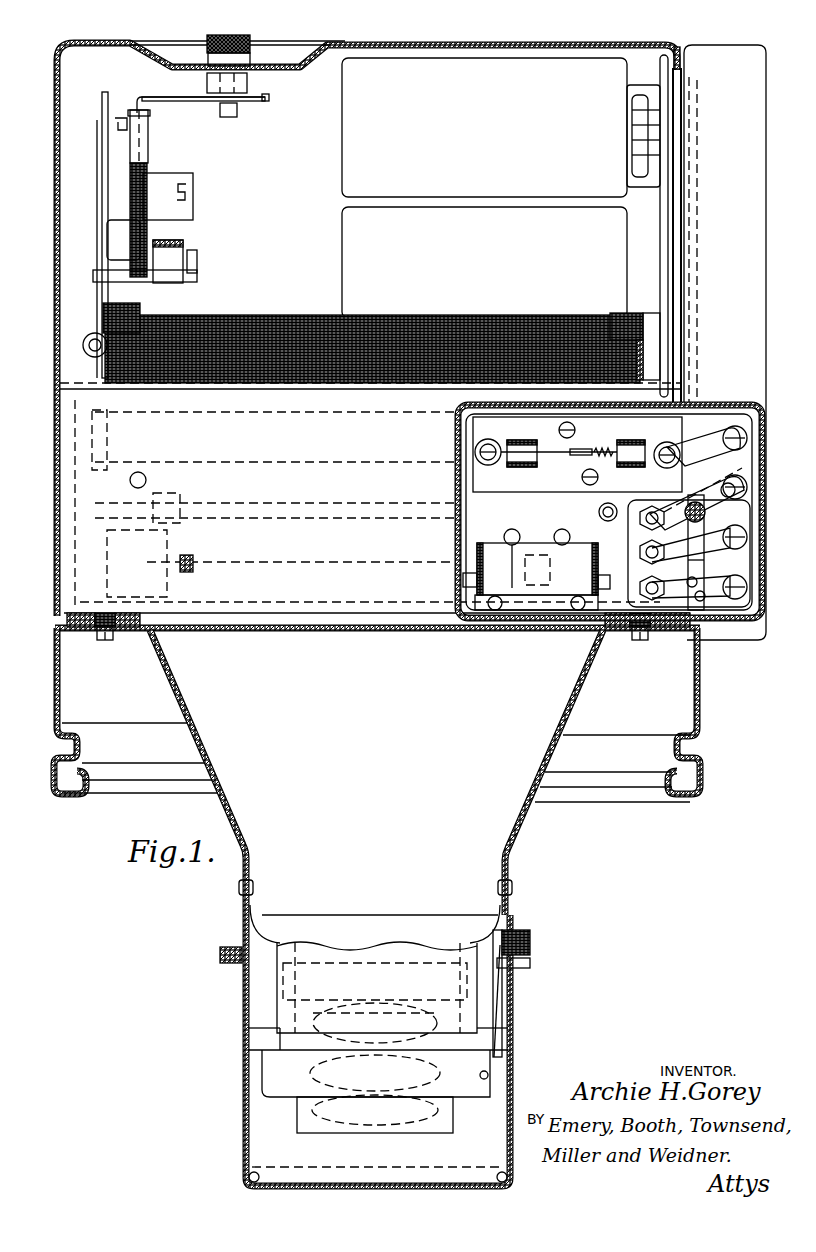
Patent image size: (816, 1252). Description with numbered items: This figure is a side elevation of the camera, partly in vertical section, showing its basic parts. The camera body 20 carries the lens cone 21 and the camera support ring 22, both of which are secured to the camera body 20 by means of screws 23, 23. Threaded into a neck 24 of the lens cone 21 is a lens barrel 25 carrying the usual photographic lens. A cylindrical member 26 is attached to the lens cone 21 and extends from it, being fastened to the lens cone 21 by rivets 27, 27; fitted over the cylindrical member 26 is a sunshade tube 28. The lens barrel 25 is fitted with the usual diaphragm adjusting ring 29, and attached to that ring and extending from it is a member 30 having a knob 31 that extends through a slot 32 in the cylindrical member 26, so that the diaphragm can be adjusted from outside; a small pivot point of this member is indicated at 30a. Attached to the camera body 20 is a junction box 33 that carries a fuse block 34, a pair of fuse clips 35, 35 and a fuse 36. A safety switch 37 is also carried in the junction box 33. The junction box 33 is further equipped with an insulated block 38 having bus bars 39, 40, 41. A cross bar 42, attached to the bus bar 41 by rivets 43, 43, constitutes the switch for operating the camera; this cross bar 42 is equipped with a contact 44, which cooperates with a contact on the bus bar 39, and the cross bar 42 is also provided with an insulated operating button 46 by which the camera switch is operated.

The camera body 20 is at (88, 382).
The lens cone 21 is at (238, 812).
The camera support ring 22 is at (62, 690).
The screws 23 is at (103, 645).
The neck 24 is at (281, 970).
The lens barrel 25 is at (285, 1040).
The cylindrical member 26 is at (243, 916).
The rivets 27 is at (255, 888).
The sunshade tube 28 is at (243, 1112).
The diaphragm adjusting ring 29 is at (462, 1085).
The member 30 is at (503, 1017).
The pivot 30a is at (489, 1076).
The knob 31 is at (531, 941).
The slot 32 is at (531, 963).
The junction box 33 is at (722, 410).
The fuse block 34 is at (527, 485).
The fuse clips 35 is at (518, 447).
The fuse 36 is at (583, 450).
The safety switch 37 is at (488, 590).
The insulated block 38 is at (746, 476).
The bus bar 39 is at (664, 498).
The bus bar 40 is at (648, 544).
The bus bar 41 is at (718, 596).
The cross bar 42 is at (688, 578).
The rivets 43 is at (694, 600).
The contact 44 is at (748, 466).
The insulated operating button 46 is at (686, 518).